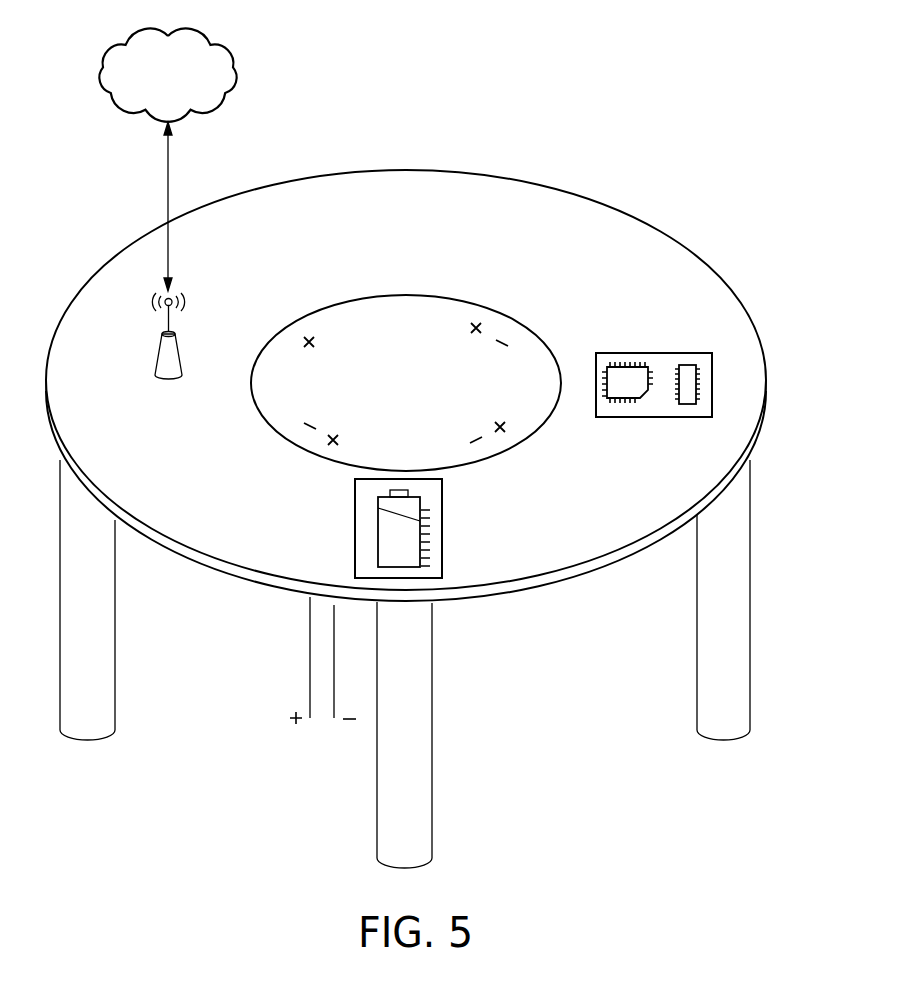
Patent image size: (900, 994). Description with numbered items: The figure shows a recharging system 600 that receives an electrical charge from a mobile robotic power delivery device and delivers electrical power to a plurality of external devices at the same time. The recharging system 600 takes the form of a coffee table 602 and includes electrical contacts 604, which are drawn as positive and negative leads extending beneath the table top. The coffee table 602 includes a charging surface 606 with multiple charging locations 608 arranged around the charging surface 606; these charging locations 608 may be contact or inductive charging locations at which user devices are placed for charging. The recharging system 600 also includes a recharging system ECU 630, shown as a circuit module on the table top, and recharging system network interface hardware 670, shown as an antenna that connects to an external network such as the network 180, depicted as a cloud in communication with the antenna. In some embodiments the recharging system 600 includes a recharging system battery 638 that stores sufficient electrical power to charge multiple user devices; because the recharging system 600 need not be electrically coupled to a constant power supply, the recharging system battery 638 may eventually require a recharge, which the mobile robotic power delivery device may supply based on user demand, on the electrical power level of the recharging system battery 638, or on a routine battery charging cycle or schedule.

The network 180 is at (101, 70).
The recharging system 600 is at (806, 158).
The coffee table 602 is at (753, 382).
The electrical contacts 604 is at (288, 729).
The charging surface 606 is at (428, 297).
The charging locations 608 is at (339, 326).
The recharging system ECU 630 is at (630, 353).
The recharging system battery 638 is at (443, 526).
The recharging system network interface hardware 670 is at (158, 343).